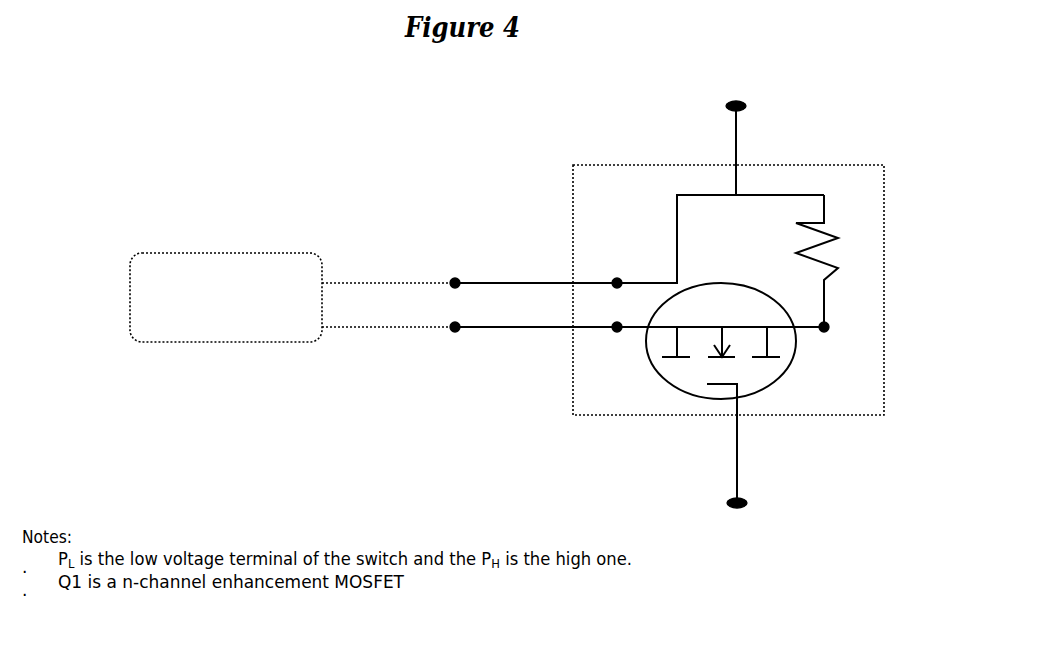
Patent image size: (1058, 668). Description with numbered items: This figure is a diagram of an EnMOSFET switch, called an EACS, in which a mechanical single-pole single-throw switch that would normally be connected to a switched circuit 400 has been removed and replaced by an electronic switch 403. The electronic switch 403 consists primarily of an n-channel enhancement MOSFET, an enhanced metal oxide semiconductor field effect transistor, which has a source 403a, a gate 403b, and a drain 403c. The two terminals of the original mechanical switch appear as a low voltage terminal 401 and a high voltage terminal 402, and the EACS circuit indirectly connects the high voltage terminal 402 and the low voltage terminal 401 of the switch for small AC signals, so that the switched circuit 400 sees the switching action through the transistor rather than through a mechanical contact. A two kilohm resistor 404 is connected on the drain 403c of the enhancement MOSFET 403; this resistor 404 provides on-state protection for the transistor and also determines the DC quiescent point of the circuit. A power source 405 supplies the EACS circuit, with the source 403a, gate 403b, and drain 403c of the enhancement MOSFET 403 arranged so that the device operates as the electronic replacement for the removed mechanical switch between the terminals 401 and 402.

The switched circuit 400 is at (217, 253).
The low voltage terminal of the switch 401 is at (455, 332).
The high voltage terminal of the switch 402 is at (458, 253).
The n-channel enhancement MOSFET 403 is at (739, 391).
The source of enhancement MOSFET switch 403a is at (613, 357).
The gate of enhancement MOSFET switch 403b is at (752, 488).
The drain of enhancement MOSFET switch 403c is at (838, 347).
The 2 kΩ resistor 404 is at (884, 252).
The power source 405 is at (730, 103).